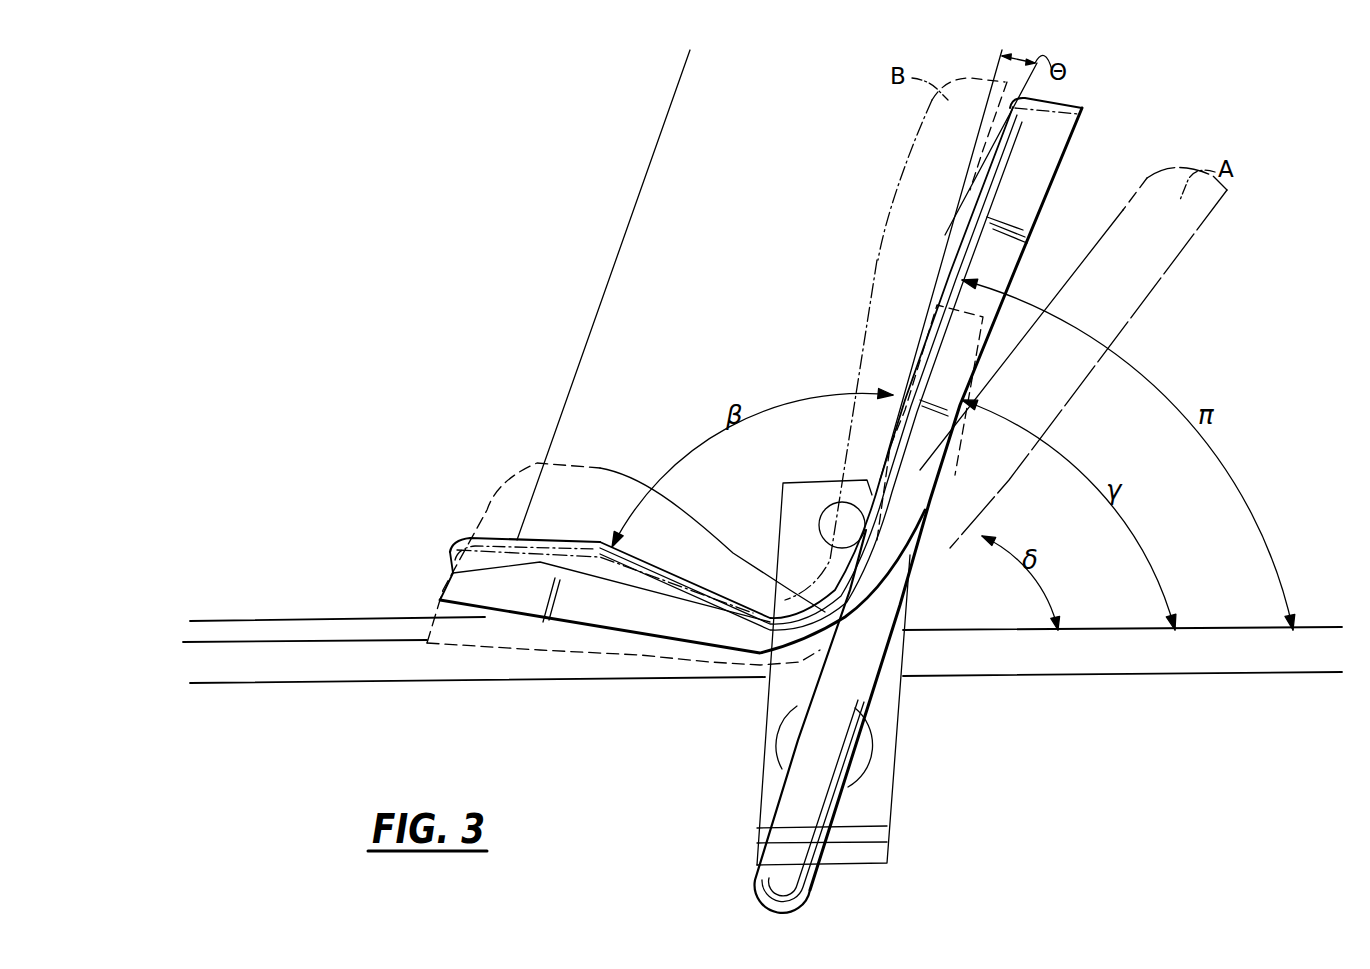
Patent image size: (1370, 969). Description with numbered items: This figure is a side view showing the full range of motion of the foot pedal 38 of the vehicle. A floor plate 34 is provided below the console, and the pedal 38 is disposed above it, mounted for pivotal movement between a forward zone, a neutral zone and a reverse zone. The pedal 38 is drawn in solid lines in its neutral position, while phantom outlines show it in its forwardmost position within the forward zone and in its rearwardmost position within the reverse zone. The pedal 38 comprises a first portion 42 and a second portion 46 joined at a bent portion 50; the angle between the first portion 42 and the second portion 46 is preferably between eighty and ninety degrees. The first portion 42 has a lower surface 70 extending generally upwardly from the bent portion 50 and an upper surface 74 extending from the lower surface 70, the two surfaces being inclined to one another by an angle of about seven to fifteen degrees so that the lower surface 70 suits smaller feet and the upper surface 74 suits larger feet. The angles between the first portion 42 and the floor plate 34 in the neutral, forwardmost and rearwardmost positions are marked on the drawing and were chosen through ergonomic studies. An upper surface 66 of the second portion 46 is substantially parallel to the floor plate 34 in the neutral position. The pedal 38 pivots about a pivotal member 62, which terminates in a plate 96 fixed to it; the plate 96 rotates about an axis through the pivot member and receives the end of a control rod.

The floor plate 34 is at (303, 627).
The foot pedal 38 is at (1053, 113).
The first portion 42 is at (1025, 190).
The second portion 46 is at (590, 612).
The bent portion 50 is at (784, 630).
The pivotal member 62 is at (768, 872).
The upper surface 66 is at (498, 536).
The lower surface 70 is at (915, 322).
The upper surface 74 is at (997, 136).
The plate 96 is at (876, 778).